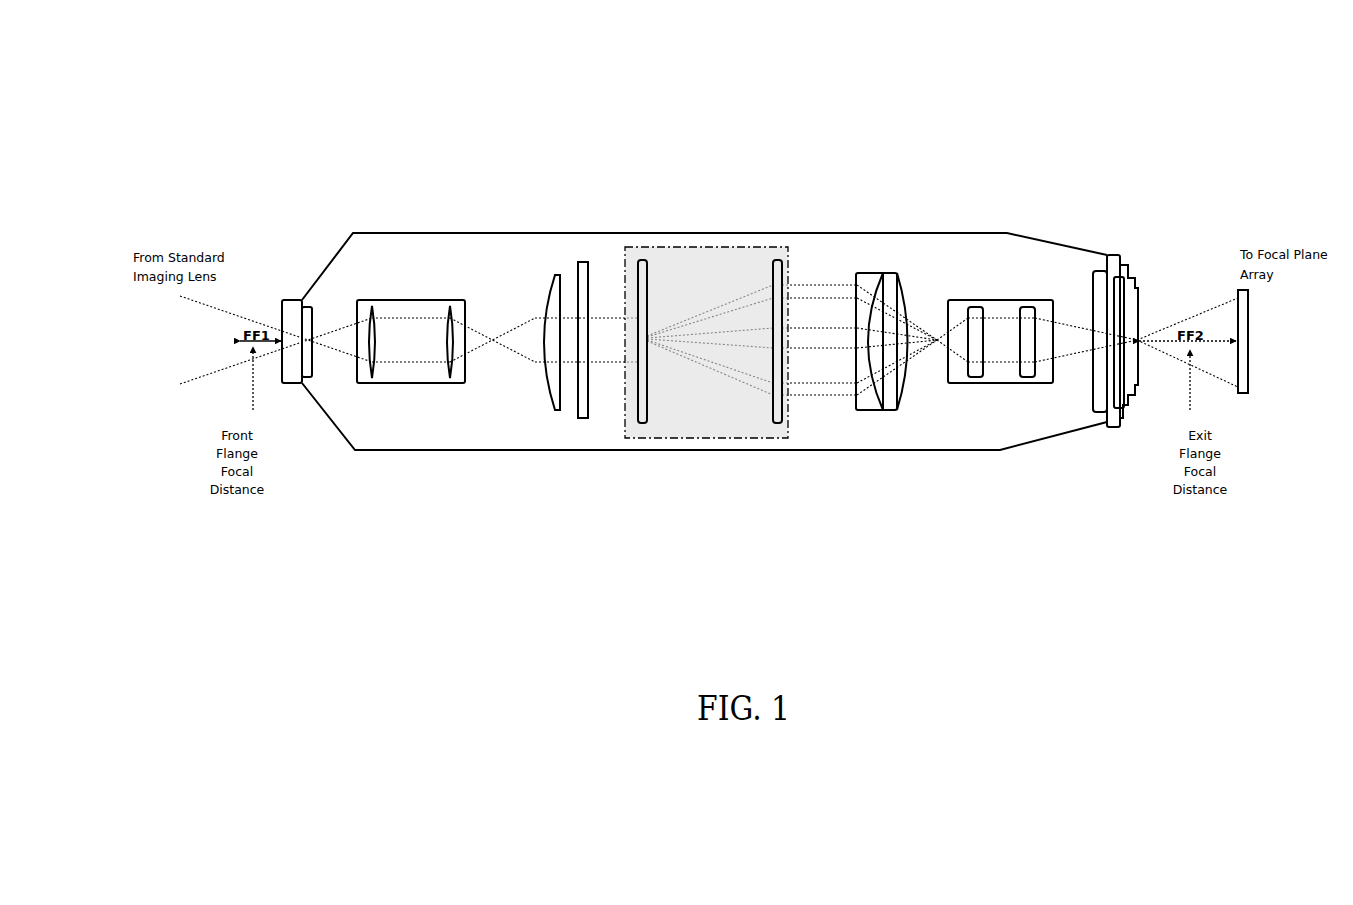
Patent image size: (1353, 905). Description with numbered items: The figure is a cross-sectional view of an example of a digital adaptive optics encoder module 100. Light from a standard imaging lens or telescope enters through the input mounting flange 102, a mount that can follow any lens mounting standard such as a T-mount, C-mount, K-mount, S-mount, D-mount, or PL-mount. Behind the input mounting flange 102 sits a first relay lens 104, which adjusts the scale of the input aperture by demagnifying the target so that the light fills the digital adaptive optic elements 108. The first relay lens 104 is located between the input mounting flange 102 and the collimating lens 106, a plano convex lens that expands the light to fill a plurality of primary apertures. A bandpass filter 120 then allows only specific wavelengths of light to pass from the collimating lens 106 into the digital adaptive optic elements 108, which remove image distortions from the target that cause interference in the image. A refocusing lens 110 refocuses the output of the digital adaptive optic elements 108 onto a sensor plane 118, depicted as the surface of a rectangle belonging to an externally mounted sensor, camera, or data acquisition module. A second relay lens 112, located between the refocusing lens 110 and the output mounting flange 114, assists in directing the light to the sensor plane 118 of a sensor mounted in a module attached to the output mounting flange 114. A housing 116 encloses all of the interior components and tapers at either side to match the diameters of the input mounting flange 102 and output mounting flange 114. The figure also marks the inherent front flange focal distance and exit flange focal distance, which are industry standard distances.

The digital adaptive optics encoder module 100 is at (696, 126).
The input mounting flange 102 is at (287, 387).
The first relay lens 104 is at (407, 387).
The collimating lens 106 is at (543, 414).
The digital adaptive optic elements 108 is at (700, 442).
The refocusing lens 110 is at (883, 414).
The second relay lens 112 is at (997, 387).
The output mounting flange 114 is at (1127, 416).
The housing 116 is at (806, 233).
The sensor plane 118 is at (1237, 303).
The bandpass filter 120 is at (580, 258).